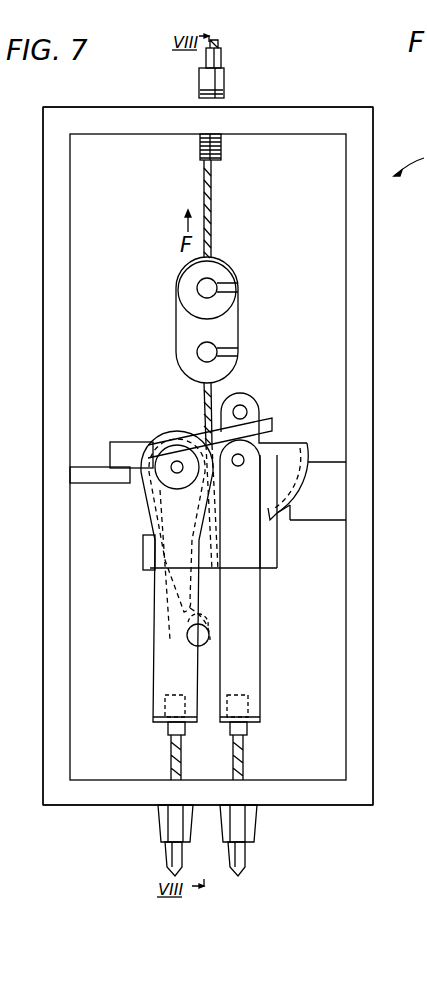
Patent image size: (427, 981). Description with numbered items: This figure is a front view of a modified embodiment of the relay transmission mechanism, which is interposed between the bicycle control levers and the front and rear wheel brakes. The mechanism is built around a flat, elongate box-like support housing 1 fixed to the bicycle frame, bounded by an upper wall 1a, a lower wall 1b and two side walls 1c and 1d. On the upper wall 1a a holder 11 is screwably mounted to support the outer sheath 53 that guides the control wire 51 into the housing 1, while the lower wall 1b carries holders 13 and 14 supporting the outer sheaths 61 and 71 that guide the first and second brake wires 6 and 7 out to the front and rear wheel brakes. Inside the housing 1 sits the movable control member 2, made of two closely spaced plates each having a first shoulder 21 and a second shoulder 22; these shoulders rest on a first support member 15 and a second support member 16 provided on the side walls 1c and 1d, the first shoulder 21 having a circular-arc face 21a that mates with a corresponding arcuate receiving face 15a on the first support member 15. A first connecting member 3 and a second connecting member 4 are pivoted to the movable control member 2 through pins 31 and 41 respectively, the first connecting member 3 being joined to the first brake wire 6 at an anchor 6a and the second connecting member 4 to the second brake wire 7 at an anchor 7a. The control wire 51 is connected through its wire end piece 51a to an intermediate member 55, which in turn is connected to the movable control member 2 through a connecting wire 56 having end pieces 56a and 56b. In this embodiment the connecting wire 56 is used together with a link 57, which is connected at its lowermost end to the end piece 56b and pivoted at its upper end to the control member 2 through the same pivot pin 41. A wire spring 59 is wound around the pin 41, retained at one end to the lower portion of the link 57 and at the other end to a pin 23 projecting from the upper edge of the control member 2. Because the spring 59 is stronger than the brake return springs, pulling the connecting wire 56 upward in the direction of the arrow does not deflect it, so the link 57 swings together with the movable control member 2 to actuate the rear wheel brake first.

The support housing 1 is at (375, 262).
The upper wall 1a is at (330, 106).
The lower wall 1b is at (320, 806).
The side wall 1c is at (365, 356).
The side wall 1d is at (52, 400).
The movable control member 2 is at (278, 565).
The first connecting member 3 is at (253, 665).
The second connecting member 4 is at (158, 680).
The first brake wire 6 is at (244, 754).
The cable anchor 6a is at (250, 707).
The second brake wire 7 is at (170, 753).
The cable anchor 7a is at (172, 705).
The holder 11 is at (224, 86).
The holder 13 is at (252, 832).
The holder 14 is at (162, 830).
The first support member 15 is at (314, 500).
The receiving face 15a is at (295, 507).
The second support member 16 is at (108, 483).
The first shoulder 21 is at (312, 448).
The face 21a is at (310, 477).
The second shoulder 22 is at (118, 441).
The pin 23 is at (243, 410).
The pin 31 is at (244, 460).
The pin 41 is at (173, 462).
The control wire 51 is at (213, 215).
The wire end piece 51a is at (197, 288).
The outer sheath 53 is at (221, 58).
The intermediate member 55 is at (238, 330).
The connecting wire 56 is at (203, 398).
The end piece 56a is at (197, 352).
The end piece 56b is at (208, 648).
The link 57 is at (210, 638).
The spring 59 is at (146, 487).
The outer sheath 61 is at (248, 858).
The outer sheath 71 is at (166, 856).